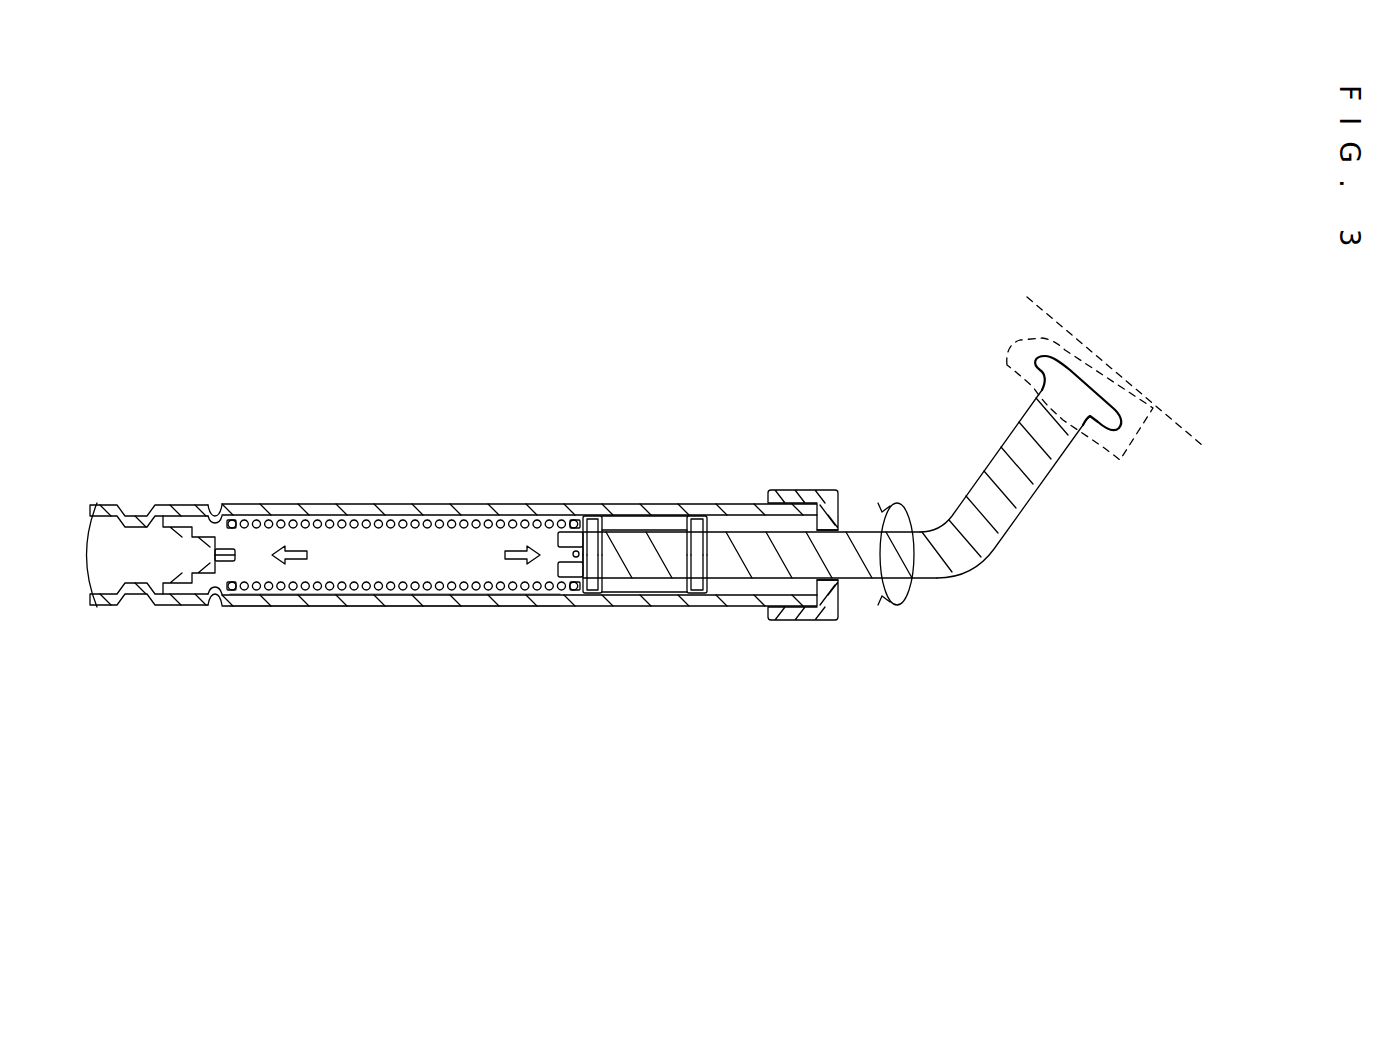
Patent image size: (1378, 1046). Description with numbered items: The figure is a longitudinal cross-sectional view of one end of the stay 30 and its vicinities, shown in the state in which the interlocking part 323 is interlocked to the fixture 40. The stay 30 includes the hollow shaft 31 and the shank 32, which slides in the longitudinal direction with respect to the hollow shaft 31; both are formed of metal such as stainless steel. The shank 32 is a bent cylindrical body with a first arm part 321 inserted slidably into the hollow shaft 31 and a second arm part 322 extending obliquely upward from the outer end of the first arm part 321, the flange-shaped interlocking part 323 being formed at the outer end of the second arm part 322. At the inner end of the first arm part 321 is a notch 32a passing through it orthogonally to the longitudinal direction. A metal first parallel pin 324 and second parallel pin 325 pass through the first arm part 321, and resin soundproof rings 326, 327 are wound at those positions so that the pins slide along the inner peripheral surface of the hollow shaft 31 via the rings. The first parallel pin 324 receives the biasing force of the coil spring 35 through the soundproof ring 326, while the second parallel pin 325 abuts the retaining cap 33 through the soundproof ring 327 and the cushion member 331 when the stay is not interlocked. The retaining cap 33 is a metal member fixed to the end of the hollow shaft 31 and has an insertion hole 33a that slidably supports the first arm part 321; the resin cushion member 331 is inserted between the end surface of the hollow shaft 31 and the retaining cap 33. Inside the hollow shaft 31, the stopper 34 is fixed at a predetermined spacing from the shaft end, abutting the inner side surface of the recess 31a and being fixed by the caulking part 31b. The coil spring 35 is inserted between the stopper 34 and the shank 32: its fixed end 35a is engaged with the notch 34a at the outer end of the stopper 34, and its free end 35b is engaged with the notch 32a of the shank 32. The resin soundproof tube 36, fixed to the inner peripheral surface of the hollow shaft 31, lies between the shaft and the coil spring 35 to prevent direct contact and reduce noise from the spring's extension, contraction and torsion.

The stay 30 is at (294, 429).
The hollow shaft 31 is at (367, 504).
The recess 31a is at (141, 496).
The caulking part 31b is at (220, 495).
The shank 32 is at (1000, 423).
The notch 32a is at (566, 531).
The retaining cap 33 is at (838, 614).
The insertion hole 33a is at (844, 549).
The stopper 34 is at (215, 549).
The notch 34a is at (232, 560).
The coil spring 35 is at (492, 520).
The fixed end 35a is at (216, 592).
The free end 35b is at (574, 590).
The soundproof tube 36 is at (414, 606).
The fixture 40 is at (1008, 343).
The first arm part 321 is at (744, 572).
The second arm part 322 is at (1022, 486).
The interlocking part 323 is at (1108, 410).
The first parallel pin 324 is at (592, 594).
The second parallel pin 325 is at (698, 594).
The soundproof ring 326 is at (594, 516).
The soundproof ring 327 is at (690, 516).
The cushion member 331 is at (805, 490).